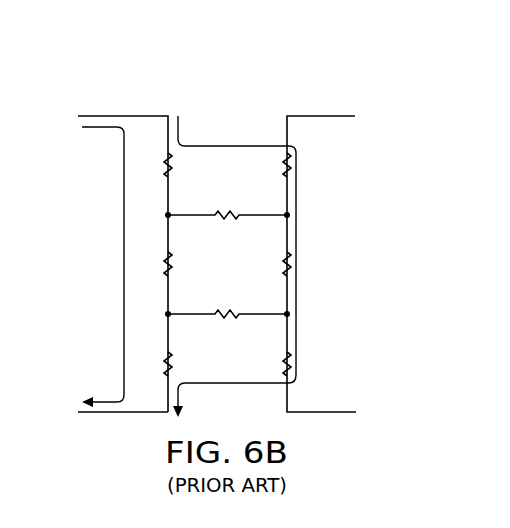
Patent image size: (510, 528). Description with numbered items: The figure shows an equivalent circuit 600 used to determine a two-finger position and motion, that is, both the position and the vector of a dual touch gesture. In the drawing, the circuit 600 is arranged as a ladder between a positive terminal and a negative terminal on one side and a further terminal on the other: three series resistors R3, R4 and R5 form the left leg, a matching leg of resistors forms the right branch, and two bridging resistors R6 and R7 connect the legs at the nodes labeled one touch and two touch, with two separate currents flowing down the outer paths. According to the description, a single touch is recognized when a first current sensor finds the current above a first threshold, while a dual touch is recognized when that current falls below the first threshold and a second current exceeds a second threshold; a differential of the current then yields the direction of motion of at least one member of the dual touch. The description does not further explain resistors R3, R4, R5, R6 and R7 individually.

The equivalent circuit 600 is at (247, 106).
The resistor R3 is at (154, 165).
The resistor R4 is at (154, 264).
The resistor R5 is at (154, 364).
The resistor R6 (1 touch) R6 is at (227, 204).
The resistor R7 (2 touch) R7 is at (227, 303).